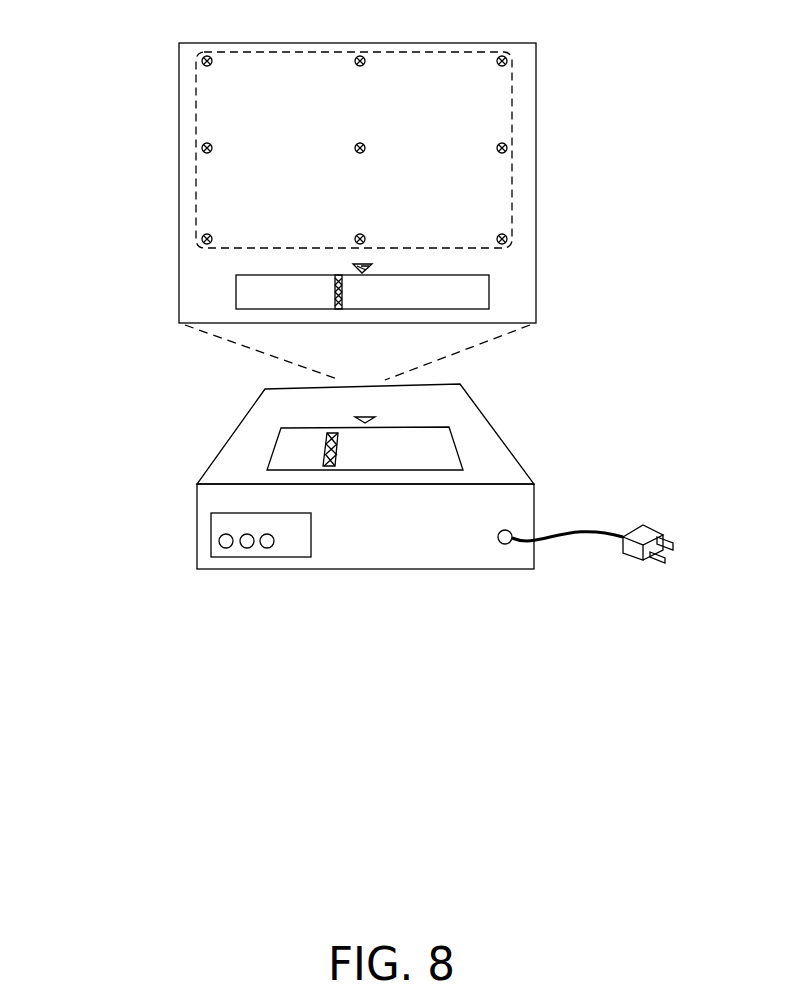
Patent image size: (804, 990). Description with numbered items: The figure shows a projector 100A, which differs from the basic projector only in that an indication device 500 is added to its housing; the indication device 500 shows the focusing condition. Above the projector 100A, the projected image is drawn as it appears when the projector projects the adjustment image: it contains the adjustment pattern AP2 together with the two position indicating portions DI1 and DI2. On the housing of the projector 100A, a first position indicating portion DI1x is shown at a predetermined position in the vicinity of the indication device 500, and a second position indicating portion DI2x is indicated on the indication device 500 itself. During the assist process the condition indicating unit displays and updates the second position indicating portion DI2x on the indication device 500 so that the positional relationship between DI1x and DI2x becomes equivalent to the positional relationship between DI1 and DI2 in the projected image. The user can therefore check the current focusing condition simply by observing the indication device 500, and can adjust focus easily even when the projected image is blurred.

The adjustment pattern AP2 is at (513, 128).
The position indicating portion DI2 is at (333, 289).
The position indicating portion DI1 is at (363, 264).
The first position indicating portion DI1x is at (365, 417).
The second position indicating portion DI2x is at (323, 449).
The projector 100A is at (496, 432).
The indication device 500 is at (455, 447).